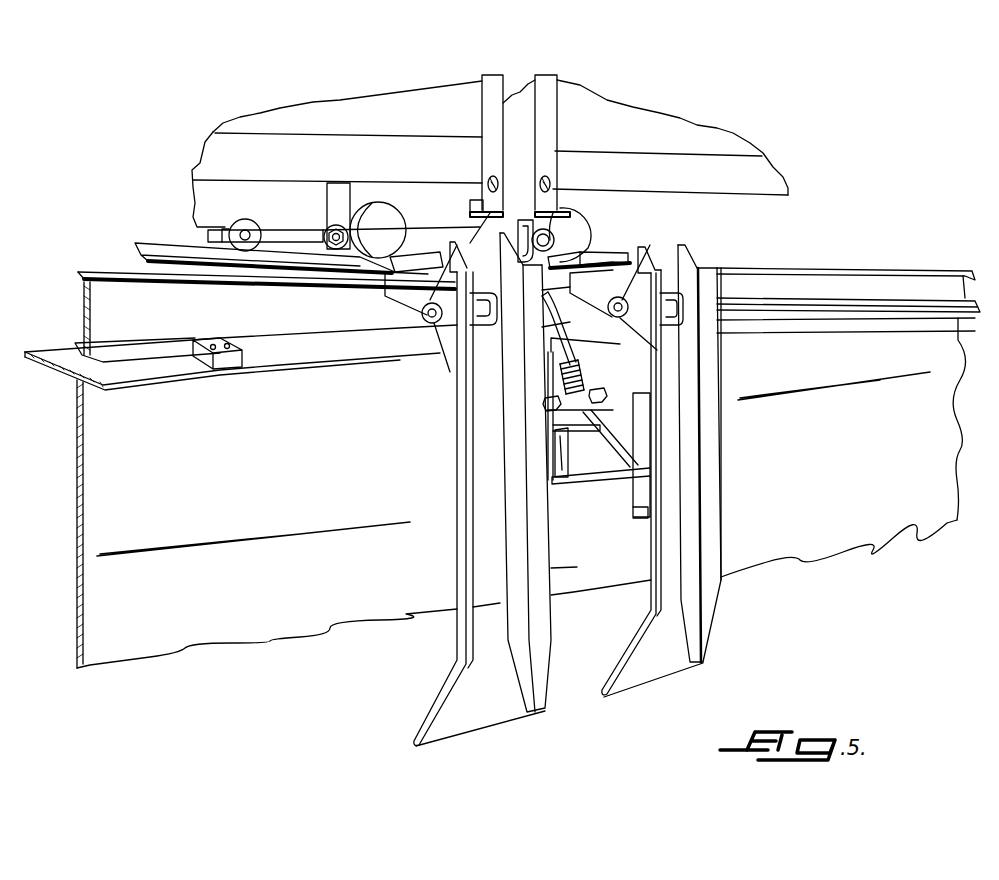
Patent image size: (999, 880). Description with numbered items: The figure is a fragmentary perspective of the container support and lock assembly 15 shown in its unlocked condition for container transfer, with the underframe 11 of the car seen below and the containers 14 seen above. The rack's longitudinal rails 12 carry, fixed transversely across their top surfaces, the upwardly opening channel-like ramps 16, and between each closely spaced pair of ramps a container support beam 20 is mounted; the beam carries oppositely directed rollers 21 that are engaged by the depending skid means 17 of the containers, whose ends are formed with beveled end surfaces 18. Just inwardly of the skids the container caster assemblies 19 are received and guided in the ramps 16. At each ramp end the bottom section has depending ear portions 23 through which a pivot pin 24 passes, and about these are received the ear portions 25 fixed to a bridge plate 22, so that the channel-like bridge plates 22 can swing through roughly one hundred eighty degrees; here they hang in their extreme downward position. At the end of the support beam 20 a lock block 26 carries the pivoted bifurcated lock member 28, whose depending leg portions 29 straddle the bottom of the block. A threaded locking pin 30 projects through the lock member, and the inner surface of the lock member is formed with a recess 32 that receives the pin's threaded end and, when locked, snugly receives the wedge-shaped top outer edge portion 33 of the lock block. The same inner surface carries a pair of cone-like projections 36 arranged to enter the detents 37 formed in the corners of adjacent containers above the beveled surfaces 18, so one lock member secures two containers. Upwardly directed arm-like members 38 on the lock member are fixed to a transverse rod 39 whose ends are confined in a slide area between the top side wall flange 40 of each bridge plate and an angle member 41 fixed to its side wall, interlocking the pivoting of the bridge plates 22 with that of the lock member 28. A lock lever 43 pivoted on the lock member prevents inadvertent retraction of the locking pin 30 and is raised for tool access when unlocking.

The underframe 11 is at (178, 475).
The rails 12 is at (890, 270).
The containers 14 is at (328, 108).
The container support and lock assembly 15 is at (724, 386).
The ramps 16 is at (181, 268).
The skid means 17 is at (200, 192).
The beveled end surfaces 18 is at (483, 240).
The caster assemblies 19 is at (370, 202).
The container support beam 20 is at (298, 233).
The rollers 21 is at (270, 230).
The bridge plates 22 is at (460, 520).
The ear portions 23 is at (493, 333).
The pivot pin 24 is at (422, 314).
The ear portions 25 is at (441, 348).
The lock block 26 is at (480, 232).
The lock member 28 is at (593, 414).
The leg portions 29 is at (568, 343).
The locking pin 30 is at (576, 366).
The recess 32 is at (557, 368).
The wedge-shaped top outer edge portion 33 is at (515, 222).
The cone-like projections 36 is at (599, 396).
The detents 37 is at (489, 180).
The arm-like members 38 is at (553, 467).
The transverse rod 39 is at (588, 481).
The top side wall flange 40 is at (657, 545).
The angle member 41 is at (635, 510).
The lock lever 43 is at (571, 450).